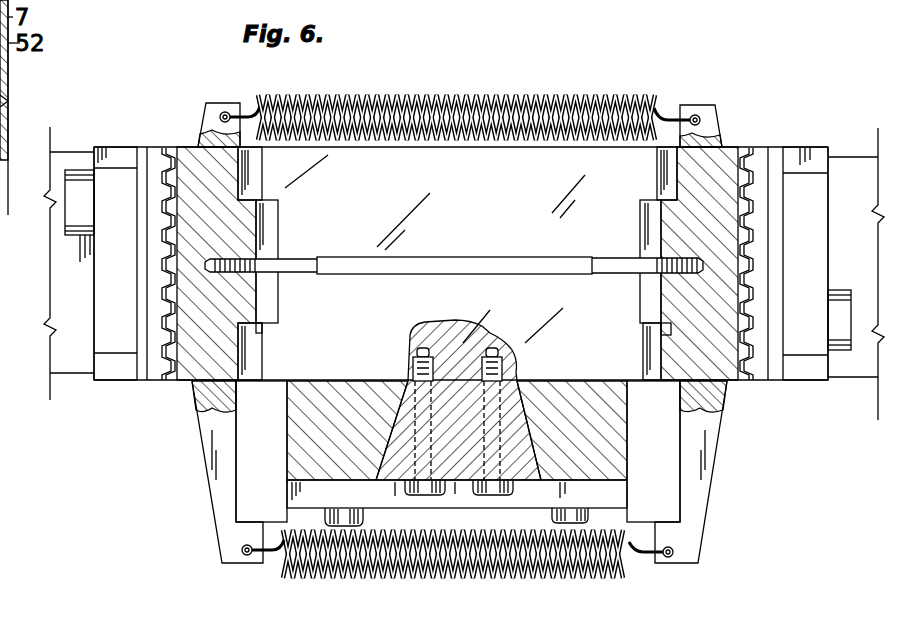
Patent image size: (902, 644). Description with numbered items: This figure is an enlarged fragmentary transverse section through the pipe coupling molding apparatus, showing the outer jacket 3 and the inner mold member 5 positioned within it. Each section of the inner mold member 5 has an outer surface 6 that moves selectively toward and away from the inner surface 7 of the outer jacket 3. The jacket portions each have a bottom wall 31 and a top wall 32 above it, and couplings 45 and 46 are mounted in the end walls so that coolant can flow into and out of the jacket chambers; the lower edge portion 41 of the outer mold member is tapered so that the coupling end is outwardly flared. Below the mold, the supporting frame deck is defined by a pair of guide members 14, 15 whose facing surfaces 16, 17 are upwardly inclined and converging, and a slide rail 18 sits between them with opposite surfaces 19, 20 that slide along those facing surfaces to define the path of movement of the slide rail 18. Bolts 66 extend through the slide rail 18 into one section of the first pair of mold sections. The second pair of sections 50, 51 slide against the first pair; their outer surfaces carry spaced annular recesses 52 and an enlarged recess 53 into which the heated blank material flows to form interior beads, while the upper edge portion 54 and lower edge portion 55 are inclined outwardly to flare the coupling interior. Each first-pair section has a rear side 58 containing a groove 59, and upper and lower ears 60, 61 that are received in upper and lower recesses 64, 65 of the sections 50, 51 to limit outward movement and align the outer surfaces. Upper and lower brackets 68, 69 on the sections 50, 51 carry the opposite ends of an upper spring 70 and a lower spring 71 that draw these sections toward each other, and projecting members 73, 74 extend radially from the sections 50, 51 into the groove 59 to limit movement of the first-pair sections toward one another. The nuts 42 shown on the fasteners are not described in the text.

The outer jacket 3 is at (133, 146).
The inner mold member 5 is at (192, 145).
The outer surface 6 is at (168, 240).
The inner surface 7 is at (168, 291).
The guide member 14 is at (627, 450).
The guide member 15 is at (287, 433).
The facing surface 16 is at (512, 382).
The facing surface 17 is at (405, 381).
The slide rail 18 is at (454, 492).
The opposite surface 19 is at (528, 476).
The opposite surface 20 is at (370, 478).
The bottom wall 31 is at (118, 378).
The top wall 32 is at (113, 150).
The lower edge portion 41 is at (8, 120).
The nut 42 is at (325, 518).
The coupling 45 is at (75, 237).
The coupling 46 is at (838, 292).
The section 50 is at (737, 148).
The section 51 is at (180, 146).
The annular recess 52 is at (172, 215).
The enlarged recess 53 is at (168, 265).
The upper edge portion 54 is at (160, 147).
The lower edge portion 55 is at (160, 382).
The rear side 58 is at (388, 165).
The groove 59 is at (445, 257).
The upper ear 60 is at (262, 168).
The lower ear 61 is at (262, 357).
The upper recess 64 is at (276, 198).
The lower recess 65 is at (258, 334).
The bolt 66 is at (420, 497).
The upper bracket 68 is at (222, 103).
The lower bracket 69 is at (210, 516).
The upper spring 70 is at (490, 97).
The lower spring 71 is at (373, 580).
The projecting member 73 is at (605, 257).
The projecting member 74 is at (310, 257).